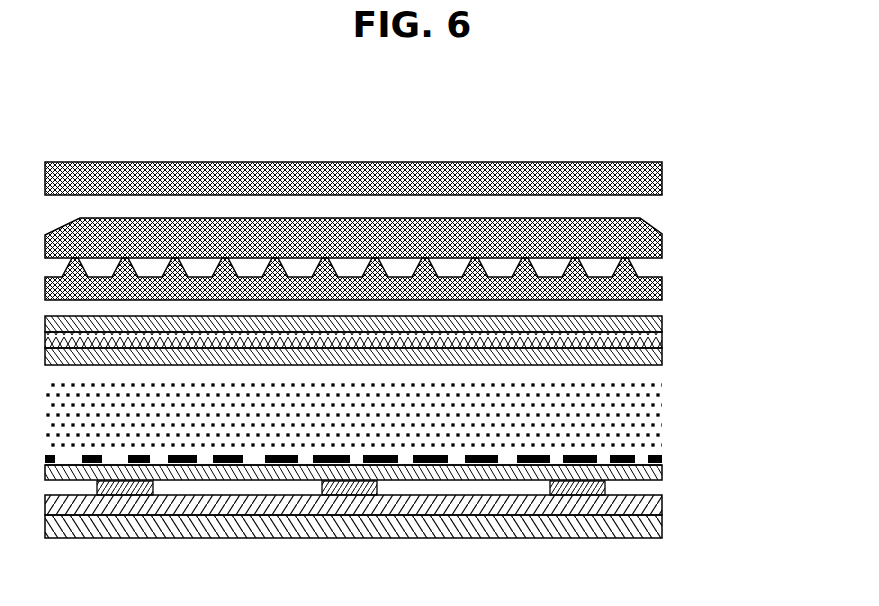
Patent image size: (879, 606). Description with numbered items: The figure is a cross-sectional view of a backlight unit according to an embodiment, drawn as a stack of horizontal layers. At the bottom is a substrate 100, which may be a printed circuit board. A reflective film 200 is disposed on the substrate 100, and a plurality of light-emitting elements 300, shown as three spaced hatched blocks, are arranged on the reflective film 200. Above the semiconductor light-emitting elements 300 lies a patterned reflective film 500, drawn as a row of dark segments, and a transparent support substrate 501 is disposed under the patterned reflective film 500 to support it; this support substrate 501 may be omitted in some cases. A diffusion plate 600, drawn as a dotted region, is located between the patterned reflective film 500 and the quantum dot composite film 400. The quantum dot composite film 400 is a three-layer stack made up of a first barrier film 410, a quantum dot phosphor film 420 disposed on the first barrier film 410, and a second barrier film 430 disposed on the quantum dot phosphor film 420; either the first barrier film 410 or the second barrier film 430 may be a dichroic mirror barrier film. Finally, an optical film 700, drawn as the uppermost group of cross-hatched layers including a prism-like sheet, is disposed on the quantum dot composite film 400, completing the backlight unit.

The substrate 100 is at (662, 535).
The reflective film 200 is at (662, 510).
The light-emitting elements 300 is at (595, 487).
The quantum dot composite film 400 is at (410, 343).
The first barrier film 410 is at (381, 365).
The quantum dot phosphor film 420 is at (662, 339).
The second barrier film 430 is at (662, 323).
The patterned reflective film 500 is at (662, 457).
The support substrate 501 is at (662, 466).
The diffusion plate 600 is at (665, 385).
The optical film 700 is at (672, 162).